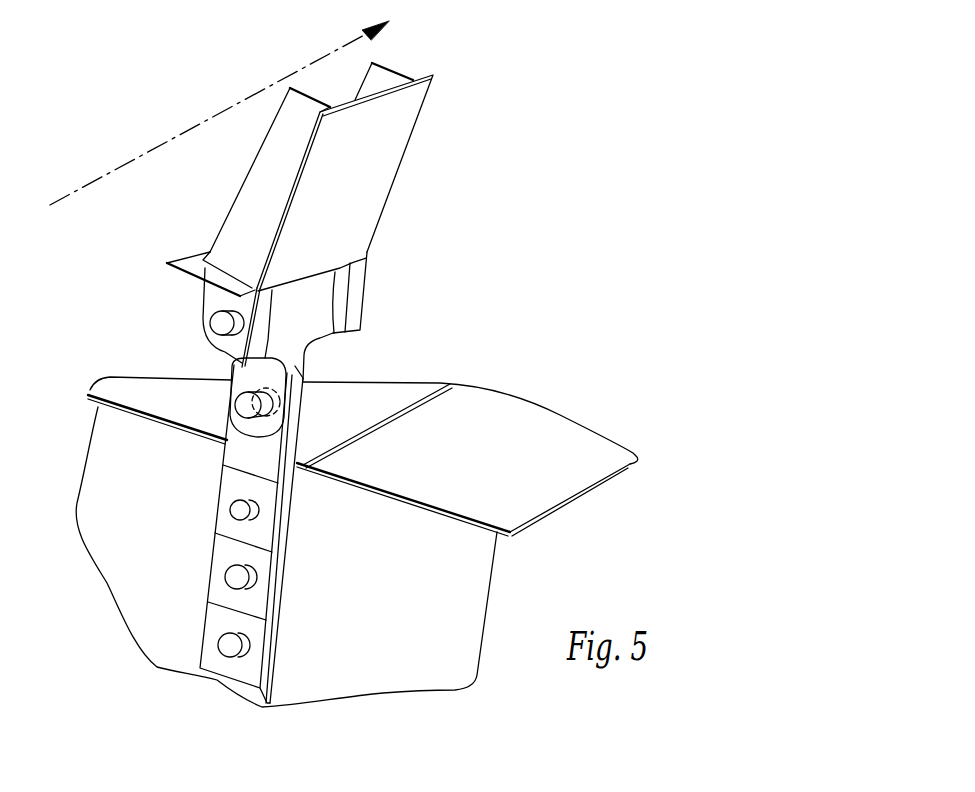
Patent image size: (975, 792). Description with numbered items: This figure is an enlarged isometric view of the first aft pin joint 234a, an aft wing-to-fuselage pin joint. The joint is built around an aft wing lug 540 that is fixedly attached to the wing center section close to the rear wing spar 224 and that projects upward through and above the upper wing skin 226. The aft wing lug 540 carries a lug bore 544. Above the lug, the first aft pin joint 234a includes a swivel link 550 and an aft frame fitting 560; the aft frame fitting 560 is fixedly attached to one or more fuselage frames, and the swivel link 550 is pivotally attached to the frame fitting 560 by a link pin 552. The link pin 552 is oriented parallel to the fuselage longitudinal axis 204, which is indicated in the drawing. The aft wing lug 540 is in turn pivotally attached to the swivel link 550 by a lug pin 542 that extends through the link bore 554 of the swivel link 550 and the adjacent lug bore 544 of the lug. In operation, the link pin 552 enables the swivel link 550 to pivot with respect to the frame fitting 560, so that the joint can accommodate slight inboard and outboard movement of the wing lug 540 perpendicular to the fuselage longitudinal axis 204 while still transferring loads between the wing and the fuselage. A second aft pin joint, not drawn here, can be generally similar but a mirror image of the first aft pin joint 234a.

The fuselage longitudinal axis 204 is at (315, 58).
The aft frame fitting 560 is at (397, 160).
The swivel link 550 is at (307, 308).
The first aft pin joint 234a is at (401, 303).
The link pin 552 is at (212, 325).
The lug bore 544 is at (266, 364).
The lug pin 542 is at (240, 410).
The link bore 554 is at (198, 430).
The upper wing skin 226 is at (388, 400).
The rear wing spar 224 is at (103, 522).
The aft wing lug 540 is at (210, 632).